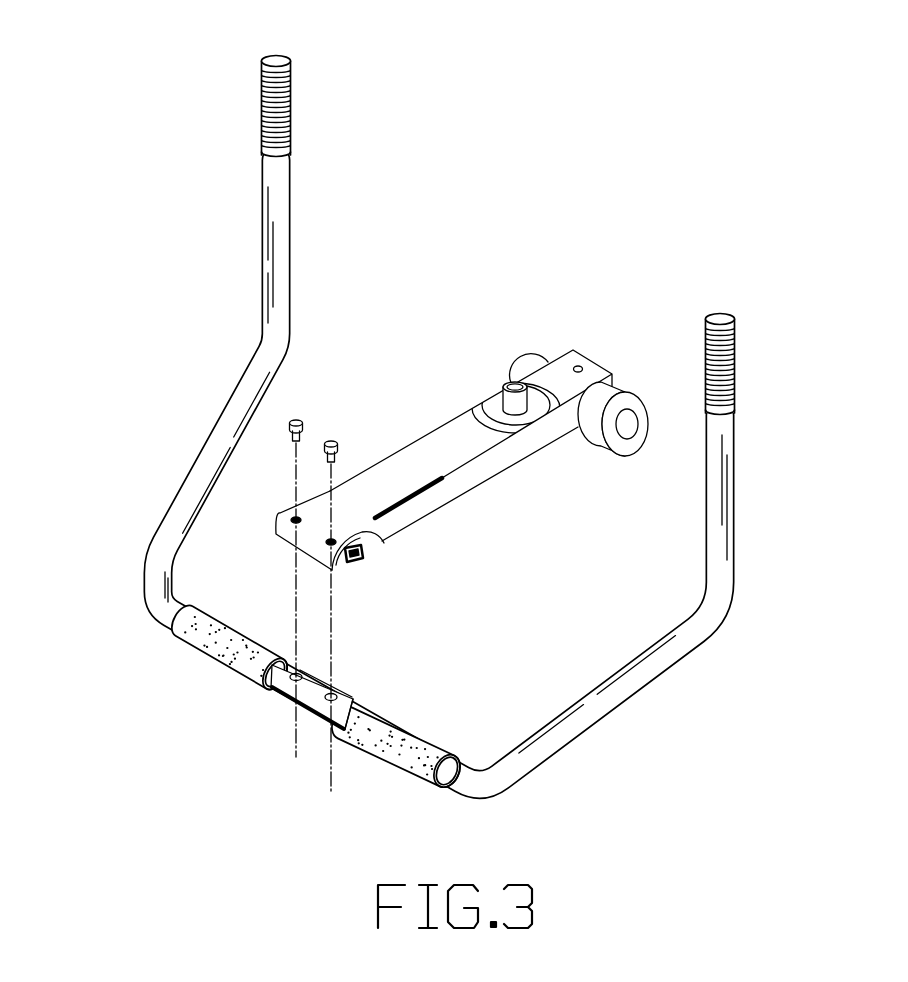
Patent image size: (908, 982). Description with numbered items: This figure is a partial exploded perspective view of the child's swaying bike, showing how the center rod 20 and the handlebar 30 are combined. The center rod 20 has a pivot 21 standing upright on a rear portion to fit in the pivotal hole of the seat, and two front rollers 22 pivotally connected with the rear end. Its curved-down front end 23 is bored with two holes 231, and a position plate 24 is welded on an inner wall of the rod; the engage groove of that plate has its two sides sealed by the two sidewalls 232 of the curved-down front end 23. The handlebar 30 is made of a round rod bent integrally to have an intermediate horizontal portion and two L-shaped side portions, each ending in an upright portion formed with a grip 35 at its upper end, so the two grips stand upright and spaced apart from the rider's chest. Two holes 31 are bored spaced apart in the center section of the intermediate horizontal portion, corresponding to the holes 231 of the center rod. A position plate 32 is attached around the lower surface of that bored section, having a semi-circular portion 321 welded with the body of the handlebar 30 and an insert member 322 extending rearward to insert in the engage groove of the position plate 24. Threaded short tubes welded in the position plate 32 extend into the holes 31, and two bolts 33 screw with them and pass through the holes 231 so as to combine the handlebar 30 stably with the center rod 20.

The center rod 20 is at (446, 452).
The pivot 21 is at (513, 383).
The front rollers 22 is at (616, 453).
The curved-down front end 23 is at (284, 540).
The holes 231 is at (380, 542).
The sidewalls 232 is at (470, 482).
The position plate 24 is at (352, 567).
The handlebar 30 is at (613, 723).
The holes 31 is at (333, 692).
The position plate 32 is at (304, 722).
The semi-circular portion 321 is at (322, 727).
The insert member 322 is at (356, 700).
The bolts 33 is at (290, 420).
The grip 35 is at (735, 373).